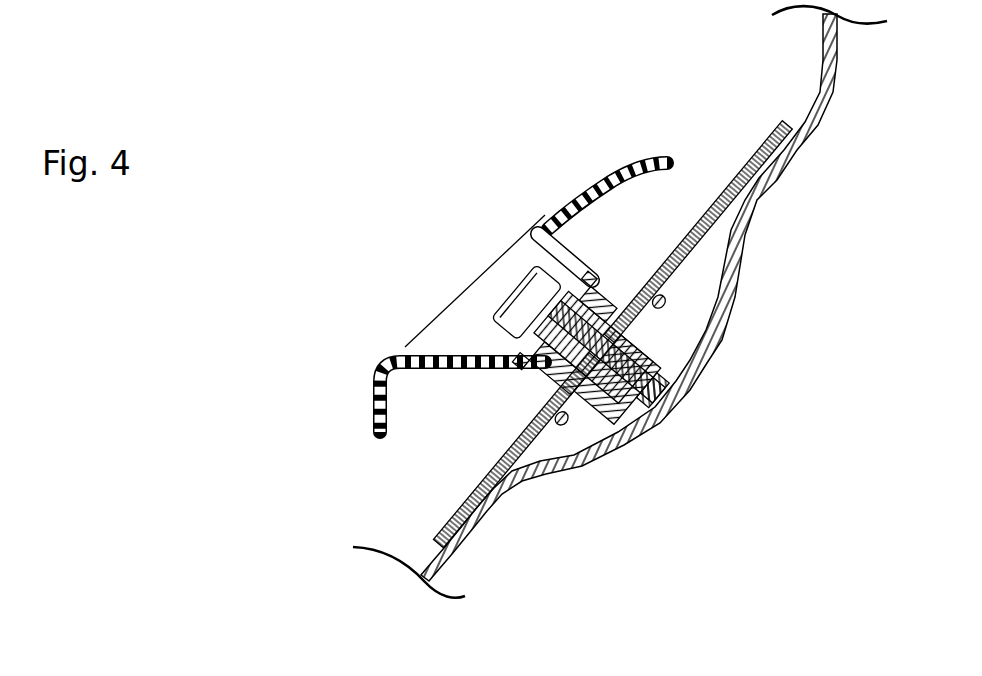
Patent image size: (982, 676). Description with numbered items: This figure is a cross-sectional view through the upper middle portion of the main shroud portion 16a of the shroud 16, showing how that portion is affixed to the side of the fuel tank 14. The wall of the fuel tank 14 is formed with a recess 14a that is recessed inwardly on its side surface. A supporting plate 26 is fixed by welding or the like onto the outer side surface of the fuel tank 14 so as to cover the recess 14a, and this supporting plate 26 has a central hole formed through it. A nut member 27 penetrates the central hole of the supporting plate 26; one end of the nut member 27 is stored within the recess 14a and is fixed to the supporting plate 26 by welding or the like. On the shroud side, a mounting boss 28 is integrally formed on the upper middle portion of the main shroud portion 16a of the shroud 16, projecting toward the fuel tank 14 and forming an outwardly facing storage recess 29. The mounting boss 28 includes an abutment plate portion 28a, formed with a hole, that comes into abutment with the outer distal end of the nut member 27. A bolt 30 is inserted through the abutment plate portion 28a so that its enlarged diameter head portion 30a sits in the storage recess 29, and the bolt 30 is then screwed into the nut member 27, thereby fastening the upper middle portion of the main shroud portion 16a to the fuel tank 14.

The fuel tank 14 is at (820, 62).
The recess 14a is at (723, 285).
The shroud 16 is at (602, 180).
The main shroud portion 16a is at (372, 405).
The supporting plate 26 is at (722, 196).
The nut member 27 is at (615, 425).
The mounting boss 28 is at (590, 252).
The abutment plate portion 28a is at (523, 369).
The storage recess 29 is at (443, 360).
The bolt 30 is at (667, 407).
The enlarged diameter head portion 30a is at (537, 263).